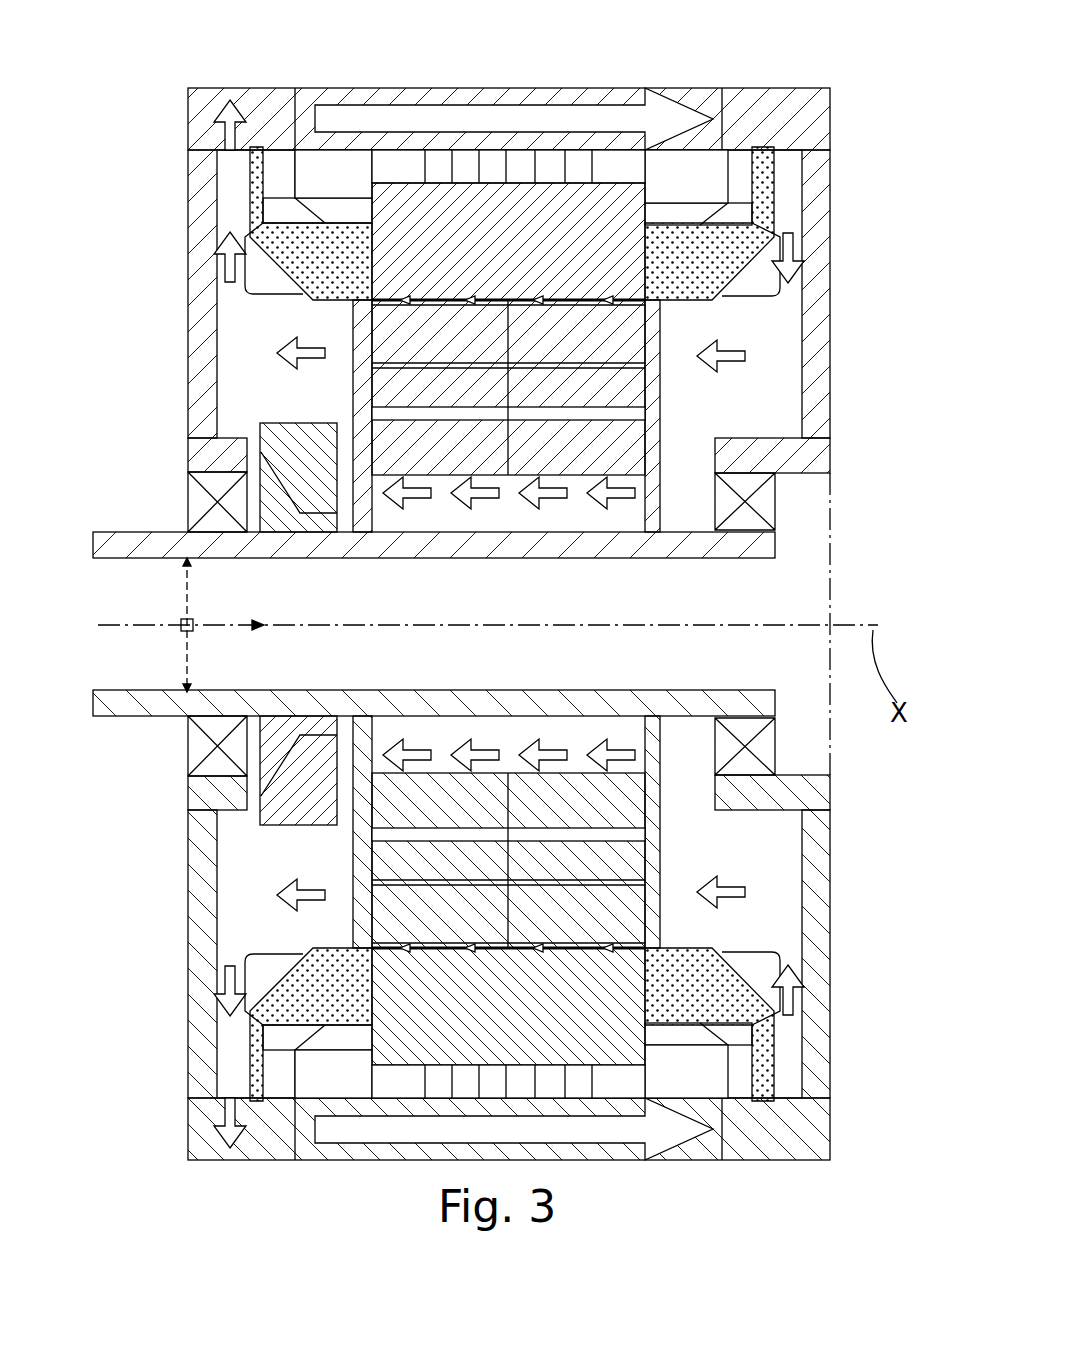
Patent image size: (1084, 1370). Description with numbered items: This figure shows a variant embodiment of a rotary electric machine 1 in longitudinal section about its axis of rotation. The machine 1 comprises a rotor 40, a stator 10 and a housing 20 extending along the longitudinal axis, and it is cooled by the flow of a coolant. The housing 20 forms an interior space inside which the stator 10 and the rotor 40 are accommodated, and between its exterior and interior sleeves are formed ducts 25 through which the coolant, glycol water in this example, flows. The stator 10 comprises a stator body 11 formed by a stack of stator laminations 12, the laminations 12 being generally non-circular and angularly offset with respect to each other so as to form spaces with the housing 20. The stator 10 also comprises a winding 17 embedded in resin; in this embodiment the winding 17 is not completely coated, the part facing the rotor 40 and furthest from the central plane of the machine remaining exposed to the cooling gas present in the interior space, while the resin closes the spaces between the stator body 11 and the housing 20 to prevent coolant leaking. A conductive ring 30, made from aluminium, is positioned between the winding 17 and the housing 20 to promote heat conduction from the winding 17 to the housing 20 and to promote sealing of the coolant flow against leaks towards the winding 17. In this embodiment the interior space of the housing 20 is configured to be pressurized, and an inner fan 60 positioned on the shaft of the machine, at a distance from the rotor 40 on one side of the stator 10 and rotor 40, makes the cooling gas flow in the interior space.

The machine 1 is at (836, 119).
The stator 10 is at (645, 262).
The stator body 11 is at (522, 255).
The stator laminations 12 is at (420, 1084).
The winding 17 is at (350, 276).
The housing 20 is at (485, 88).
The ducts 25 is at (517, 125).
The conductive ring 30 is at (262, 165).
The rotor 40 is at (522, 811).
The inner fan 60 is at (290, 452).